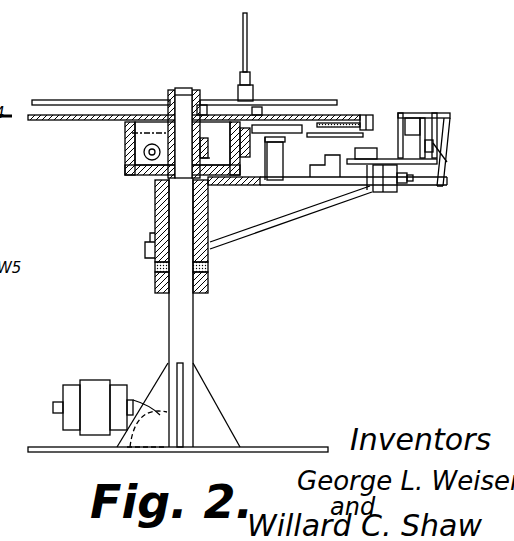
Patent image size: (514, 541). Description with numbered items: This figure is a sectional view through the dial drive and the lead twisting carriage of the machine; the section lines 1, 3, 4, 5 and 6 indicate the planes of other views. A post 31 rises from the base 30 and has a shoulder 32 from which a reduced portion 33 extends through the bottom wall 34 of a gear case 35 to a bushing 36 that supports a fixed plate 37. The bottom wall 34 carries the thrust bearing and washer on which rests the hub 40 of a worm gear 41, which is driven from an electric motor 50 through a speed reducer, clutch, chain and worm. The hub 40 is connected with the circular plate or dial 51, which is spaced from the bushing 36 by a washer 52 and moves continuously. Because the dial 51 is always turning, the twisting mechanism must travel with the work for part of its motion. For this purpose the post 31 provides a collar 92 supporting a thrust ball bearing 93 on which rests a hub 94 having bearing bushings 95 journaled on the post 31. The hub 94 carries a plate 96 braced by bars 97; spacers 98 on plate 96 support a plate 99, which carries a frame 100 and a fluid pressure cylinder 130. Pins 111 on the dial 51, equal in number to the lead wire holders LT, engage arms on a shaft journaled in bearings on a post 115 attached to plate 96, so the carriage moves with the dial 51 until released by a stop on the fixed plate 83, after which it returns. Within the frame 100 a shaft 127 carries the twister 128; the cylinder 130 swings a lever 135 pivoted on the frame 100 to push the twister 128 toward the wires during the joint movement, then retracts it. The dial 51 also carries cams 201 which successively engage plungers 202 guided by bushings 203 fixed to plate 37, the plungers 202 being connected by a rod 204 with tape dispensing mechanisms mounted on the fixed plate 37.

The section line 1- 1 is at (117, 65).
The section line 3- 3 is at (48, 213).
The section line 4- 4 is at (117, 175).
The section line 5- 5 is at (78, 122).
The section line 6- 6 is at (115, 130).
The base plate 30 is at (310, 446).
The post 31 is at (168, 327).
The shoulder 32 is at (182, 178).
The reduced portion 33 is at (187, 88).
The bottom wall 34 is at (140, 176).
The gear case 35 is at (127, 152).
The bushing 36 is at (175, 90).
The fixed plate 37 is at (78, 100).
The hub 40 is at (212, 143).
The worm gear 41 is at (204, 149).
The electric motor 50 is at (90, 380).
The circular plate or dial 51 is at (36, 122).
The washer 52 is at (205, 110).
The plate 83 is at (313, 133).
The collar 92 is at (157, 286).
The thrust ball bearing 93 is at (157, 263).
The hub 94 is at (160, 222).
The bearing bushings 95 is at (150, 249).
The plate 96 is at (330, 186).
The bars 97 is at (293, 218).
The spacers 98 is at (367, 190).
The plate 99 is at (347, 160).
The frame 100 is at (411, 185).
The pins 111 is at (257, 144).
The post 115 is at (288, 158).
The shaft 127 is at (440, 116).
The twister 128 is at (428, 112).
The fluid pressure cylinder 130 is at (383, 193).
The lever 135 is at (451, 142).
The cams 201 is at (262, 124).
The plungers 202 is at (258, 104).
The bushings 203 is at (248, 85).
The rod 204 is at (247, 27).
The lead wire holders LT is at (380, 106).